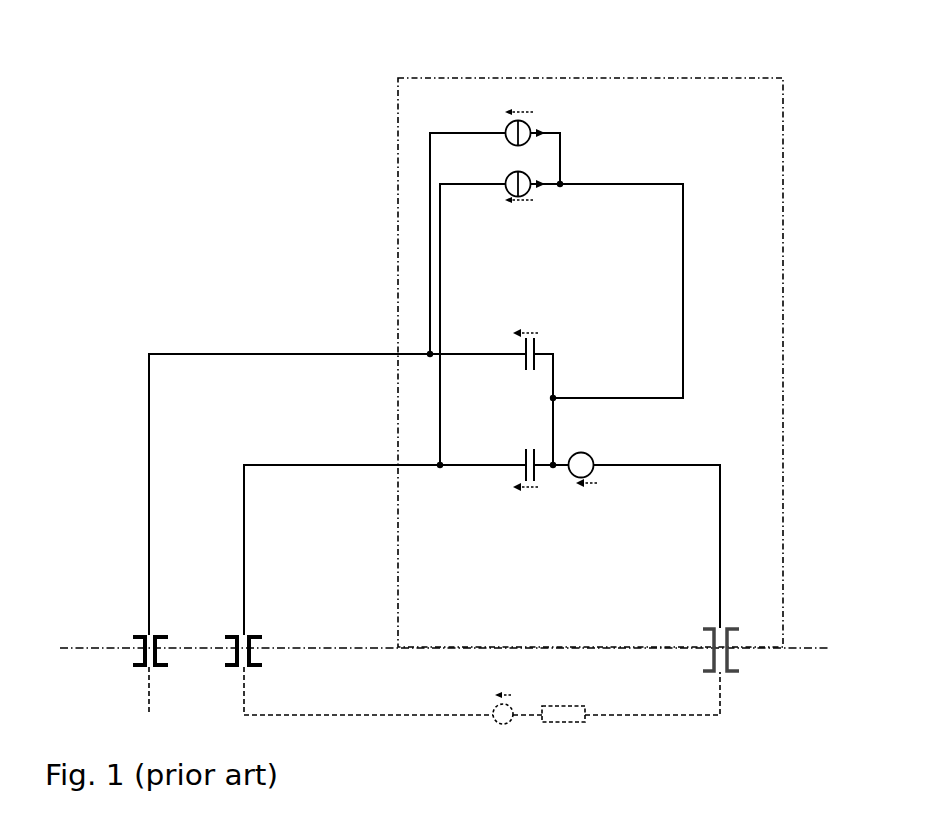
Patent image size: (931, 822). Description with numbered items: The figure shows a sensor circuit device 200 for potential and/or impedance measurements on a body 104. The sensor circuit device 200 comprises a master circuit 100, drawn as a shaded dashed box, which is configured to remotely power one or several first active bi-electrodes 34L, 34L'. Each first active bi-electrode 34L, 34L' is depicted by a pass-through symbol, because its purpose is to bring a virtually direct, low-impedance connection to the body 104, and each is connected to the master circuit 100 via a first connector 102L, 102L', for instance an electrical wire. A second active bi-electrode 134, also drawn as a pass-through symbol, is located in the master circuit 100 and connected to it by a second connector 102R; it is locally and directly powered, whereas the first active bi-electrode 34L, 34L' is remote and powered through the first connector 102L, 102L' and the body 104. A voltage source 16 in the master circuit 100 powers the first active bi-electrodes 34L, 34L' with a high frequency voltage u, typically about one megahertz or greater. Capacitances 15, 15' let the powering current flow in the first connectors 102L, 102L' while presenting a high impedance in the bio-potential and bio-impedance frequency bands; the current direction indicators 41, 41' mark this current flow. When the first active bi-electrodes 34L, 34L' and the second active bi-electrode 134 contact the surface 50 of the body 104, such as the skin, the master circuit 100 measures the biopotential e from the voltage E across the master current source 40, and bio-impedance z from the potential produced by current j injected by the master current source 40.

The master circuit 100 is at (662, 77).
The sensor circuit device 200 is at (150, 142).
The master current source 40 is at (508, 125).
The current direction indicator 41' is at (534, 301).
The capacitance 15' is at (562, 365).
The first connector 102L' is at (337, 467).
The first connector 102L is at (359, 523).
The capacitance 15 is at (490, 483).
The current direction indicator 41 is at (497, 538).
The voltage source 16 is at (593, 478).
The second connector 102R is at (654, 463).
The first active bi-electrode 34L' is at (169, 619).
The first active bi-electrode 34L is at (262, 619).
The surface 50 is at (351, 645).
The second active bi-electrode 134 is at (740, 625).
The body 104 is at (627, 712).